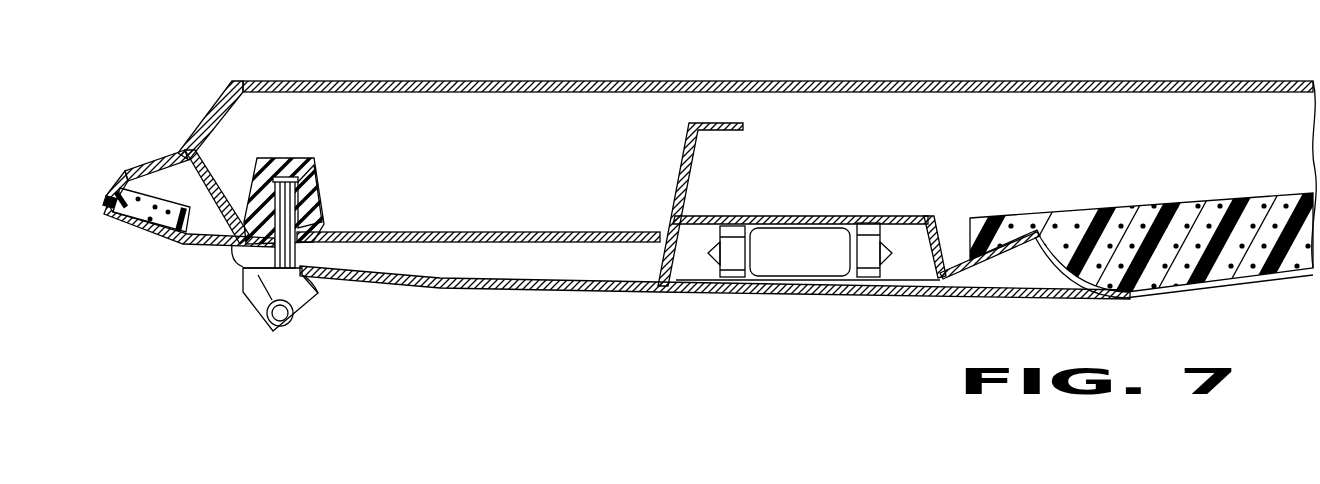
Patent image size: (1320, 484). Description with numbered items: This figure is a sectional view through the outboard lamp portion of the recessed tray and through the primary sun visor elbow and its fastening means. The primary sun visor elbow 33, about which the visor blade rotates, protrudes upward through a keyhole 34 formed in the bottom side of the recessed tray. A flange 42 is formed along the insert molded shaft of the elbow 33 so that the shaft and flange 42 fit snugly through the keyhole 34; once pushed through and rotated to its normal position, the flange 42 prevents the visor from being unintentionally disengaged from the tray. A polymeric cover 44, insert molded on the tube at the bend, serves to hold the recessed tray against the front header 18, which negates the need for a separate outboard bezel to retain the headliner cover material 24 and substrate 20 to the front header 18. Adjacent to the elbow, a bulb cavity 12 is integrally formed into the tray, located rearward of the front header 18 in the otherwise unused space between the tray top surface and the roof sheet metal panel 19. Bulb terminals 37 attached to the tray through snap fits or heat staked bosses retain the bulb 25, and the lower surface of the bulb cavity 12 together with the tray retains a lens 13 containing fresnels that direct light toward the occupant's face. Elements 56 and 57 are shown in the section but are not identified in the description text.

The bulb cavity 12 is at (792, 216).
The lens 13 is at (760, 293).
The front header 18 is at (502, 232).
The roof sheet metal panel 19 is at (883, 81).
The headliner substrate 20 is at (125, 194).
The headliner cover material 24 is at (125, 217).
The bulb 25 is at (818, 245).
The primary sun visor elbow 33 is at (286, 178).
The keyhole 34 is at (258, 300).
The bulb terminals 37 is at (733, 226).
The flange 42 is at (312, 186).
The polymeric cover 44 is at (252, 283).
The mounting block 56 is at (253, 178).
The clip arm 57 is at (318, 293).